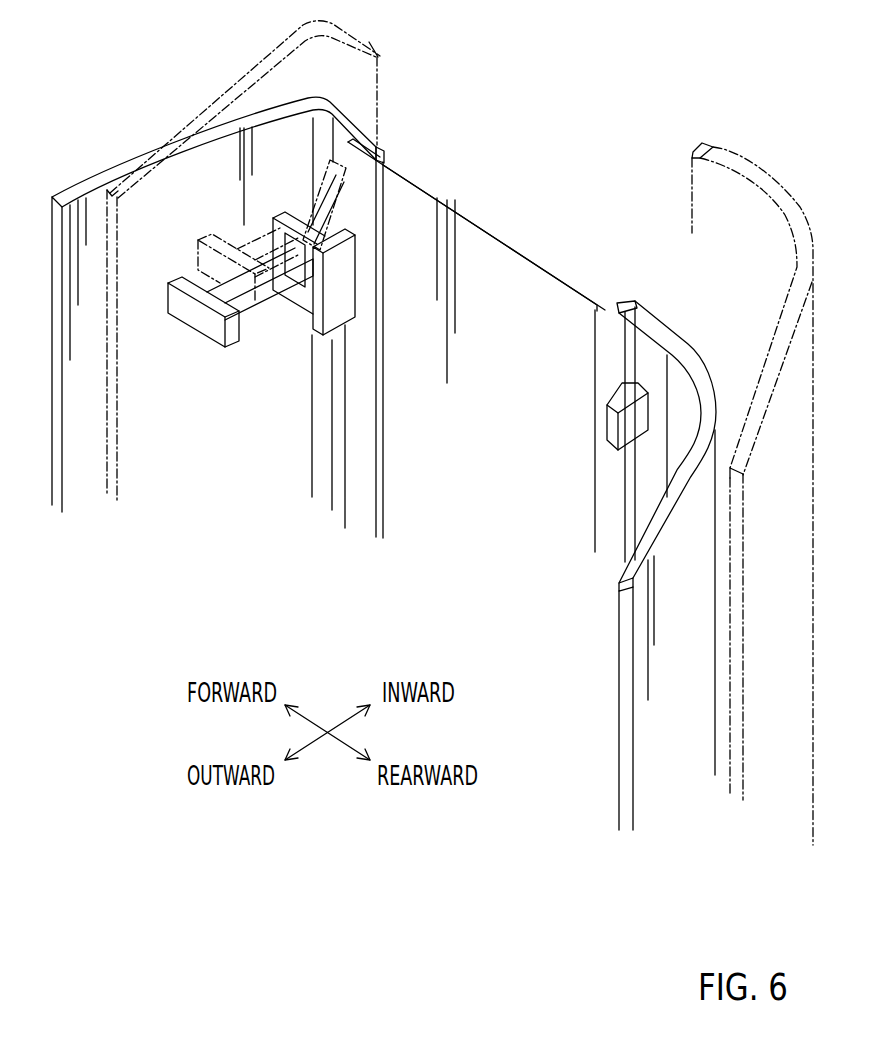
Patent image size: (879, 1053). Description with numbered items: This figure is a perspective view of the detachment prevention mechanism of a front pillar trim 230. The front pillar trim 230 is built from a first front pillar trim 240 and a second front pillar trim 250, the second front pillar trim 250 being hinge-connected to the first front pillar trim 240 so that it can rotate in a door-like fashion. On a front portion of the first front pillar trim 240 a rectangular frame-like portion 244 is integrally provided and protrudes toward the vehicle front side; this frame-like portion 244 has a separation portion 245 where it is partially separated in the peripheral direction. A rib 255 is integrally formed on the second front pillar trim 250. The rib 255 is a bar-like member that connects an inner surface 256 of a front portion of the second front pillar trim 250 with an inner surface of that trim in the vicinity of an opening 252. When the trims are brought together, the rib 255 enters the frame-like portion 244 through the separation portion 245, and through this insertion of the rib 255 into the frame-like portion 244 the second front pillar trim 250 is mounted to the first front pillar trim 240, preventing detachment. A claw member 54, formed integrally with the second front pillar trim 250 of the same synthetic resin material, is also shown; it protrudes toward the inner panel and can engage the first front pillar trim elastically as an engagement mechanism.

The front pillar trim 230 is at (417, 421).
The second front pillar trim 250 is at (212, 132).
The first front pillar trim 240 is at (519, 265).
The inner surface 256 is at (144, 210).
The opening 252 is at (378, 56).
The separation portion 245 is at (318, 226).
The frame-like portion 244 is at (300, 300).
The rib 255 is at (196, 322).
The claw member 54 is at (638, 382).